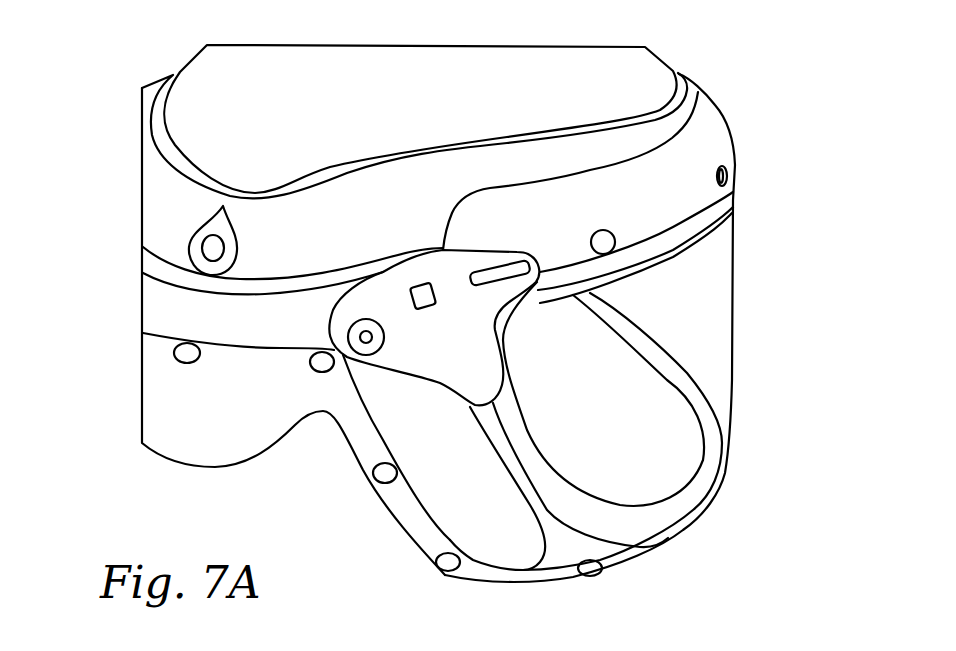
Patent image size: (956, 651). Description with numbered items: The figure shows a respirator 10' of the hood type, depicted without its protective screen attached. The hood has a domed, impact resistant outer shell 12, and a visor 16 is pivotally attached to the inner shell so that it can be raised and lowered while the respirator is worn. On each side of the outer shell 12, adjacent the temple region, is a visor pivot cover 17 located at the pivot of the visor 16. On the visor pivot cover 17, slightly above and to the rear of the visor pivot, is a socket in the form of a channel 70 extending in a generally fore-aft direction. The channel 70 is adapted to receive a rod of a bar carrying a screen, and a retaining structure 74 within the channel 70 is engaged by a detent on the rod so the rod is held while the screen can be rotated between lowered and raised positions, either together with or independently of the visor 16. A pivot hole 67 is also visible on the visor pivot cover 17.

The respirator 10' is at (406, 290).
The outer shell 12 is at (600, 55).
The visor 16 is at (717, 325).
The visor pivot cover 17 is at (402, 340).
The pivot hole 67 is at (357, 334).
The channel 70 is at (516, 263).
The retaining structure 74 is at (418, 285).